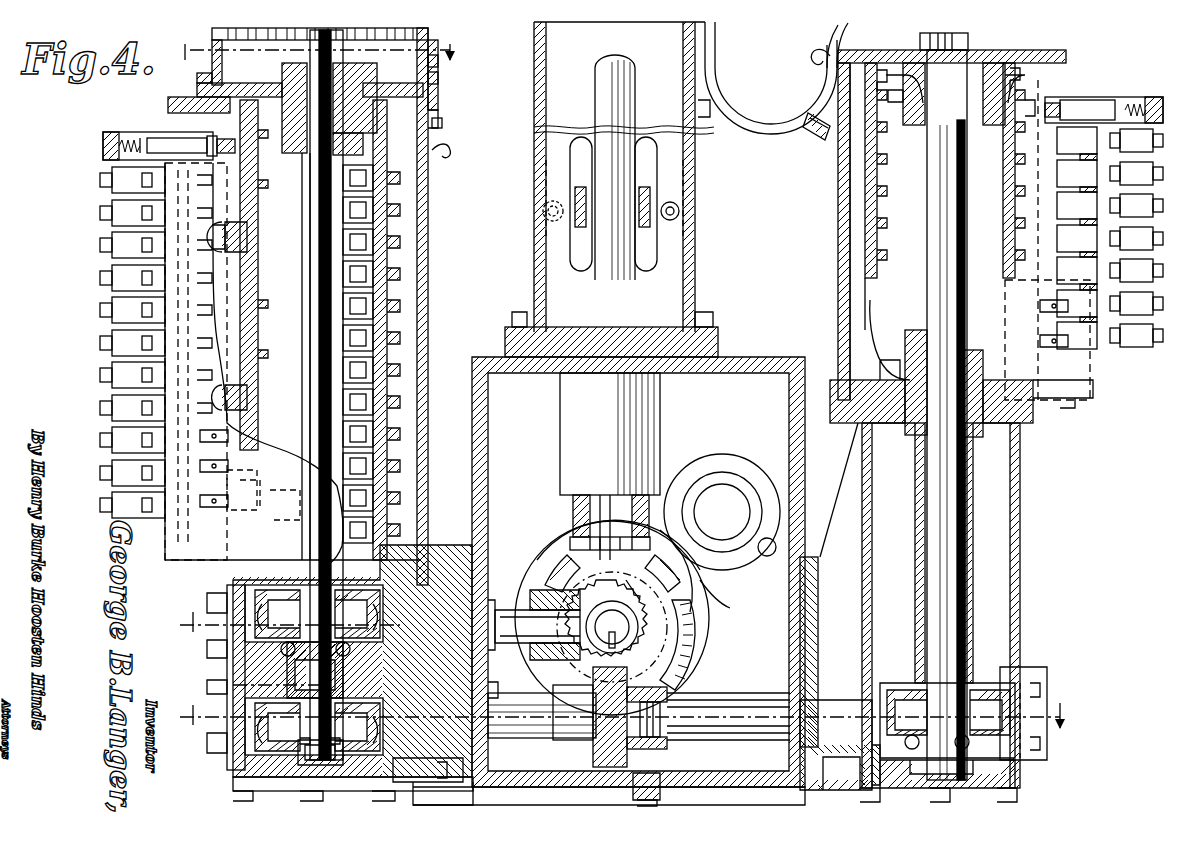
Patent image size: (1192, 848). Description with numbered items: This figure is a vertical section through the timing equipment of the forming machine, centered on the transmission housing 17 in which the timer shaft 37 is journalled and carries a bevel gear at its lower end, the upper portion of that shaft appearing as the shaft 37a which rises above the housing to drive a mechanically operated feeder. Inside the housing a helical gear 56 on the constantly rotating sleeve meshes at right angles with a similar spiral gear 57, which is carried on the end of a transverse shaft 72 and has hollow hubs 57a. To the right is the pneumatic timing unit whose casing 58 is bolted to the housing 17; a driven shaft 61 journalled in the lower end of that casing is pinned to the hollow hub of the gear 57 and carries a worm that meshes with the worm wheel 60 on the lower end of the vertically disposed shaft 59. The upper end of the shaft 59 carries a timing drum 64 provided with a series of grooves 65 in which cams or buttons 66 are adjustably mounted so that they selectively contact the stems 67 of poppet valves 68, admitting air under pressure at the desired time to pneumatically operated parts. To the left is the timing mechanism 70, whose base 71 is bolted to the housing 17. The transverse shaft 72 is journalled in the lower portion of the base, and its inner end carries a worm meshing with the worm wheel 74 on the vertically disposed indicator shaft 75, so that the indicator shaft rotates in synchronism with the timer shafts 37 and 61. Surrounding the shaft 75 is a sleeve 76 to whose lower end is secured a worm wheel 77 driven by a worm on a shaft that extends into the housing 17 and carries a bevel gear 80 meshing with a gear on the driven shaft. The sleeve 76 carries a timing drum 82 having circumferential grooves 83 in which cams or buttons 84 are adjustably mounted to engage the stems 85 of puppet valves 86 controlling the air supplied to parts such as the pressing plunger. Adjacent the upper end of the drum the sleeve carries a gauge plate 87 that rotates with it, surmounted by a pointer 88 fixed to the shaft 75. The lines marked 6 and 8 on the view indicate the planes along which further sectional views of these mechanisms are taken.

The section line 6- 6 is at (625, 671).
The section line 8- 8 is at (318, 49).
The housing 17 is at (754, 359).
The shaft 37 is at (657, 590).
The upper end of shaft 37a is at (622, 68).
The helical gear 56 is at (658, 653).
The helical gear 57 is at (590, 760).
The hollow hubs 57a is at (670, 748).
The casing 58 is at (1020, 548).
The vertically disposed shaft 59 is at (955, 603).
The worm wheel 60 is at (995, 706).
The driven shaft 61 is at (728, 716).
The timing drum 64 is at (887, 250).
The grooves 65 is at (866, 240).
The cams or buttons 66 is at (1012, 110).
The stems 67 is at (1073, 108).
The poppet valves 68 is at (1162, 116).
The timing mechanism 70 is at (430, 322).
The base 71 is at (413, 748).
The transverse shaft 72 is at (542, 711).
The worm wheel 74 is at (268, 716).
The indicator shaft 75 is at (292, 686).
The sleeve 76 is at (302, 347).
The worm wheel 77 is at (257, 615).
The bevel gear 80 is at (548, 590).
The timing drum 82 is at (385, 232).
The circumferential grooves 83 is at (370, 280).
The cams or buttons 84 is at (216, 165).
The stems 85 is at (171, 143).
The puppet valves 86 is at (102, 202).
The gauge plate 87 is at (410, 80).
The pointer 88 is at (410, 62).